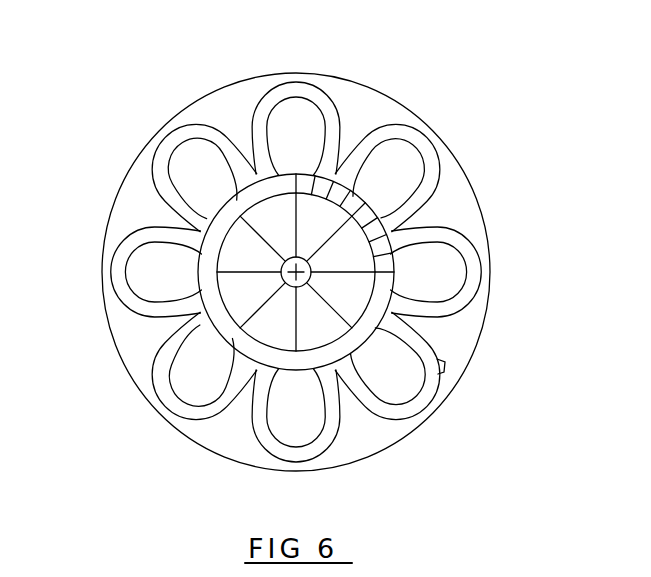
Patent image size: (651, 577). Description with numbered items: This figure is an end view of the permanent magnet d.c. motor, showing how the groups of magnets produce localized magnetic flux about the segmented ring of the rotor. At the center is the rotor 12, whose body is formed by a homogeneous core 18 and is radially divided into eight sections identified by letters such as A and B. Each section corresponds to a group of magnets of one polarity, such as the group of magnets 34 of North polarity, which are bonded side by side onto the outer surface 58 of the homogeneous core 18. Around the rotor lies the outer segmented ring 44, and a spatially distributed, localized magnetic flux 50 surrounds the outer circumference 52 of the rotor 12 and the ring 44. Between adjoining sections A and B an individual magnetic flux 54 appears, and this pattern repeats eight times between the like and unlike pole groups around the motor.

The rotor 12 is at (268, 327).
The homogeneous core 18 is at (243, 289).
The group of magnets 34 is at (392, 231).
The outer segmented ring 44 is at (253, 173).
The spatially distributed localized magnetic flux 50 is at (458, 328).
The outer circumference 52 is at (444, 365).
The individual magnetic flux 54 is at (425, 140).
The outer surface 58 is at (392, 285).